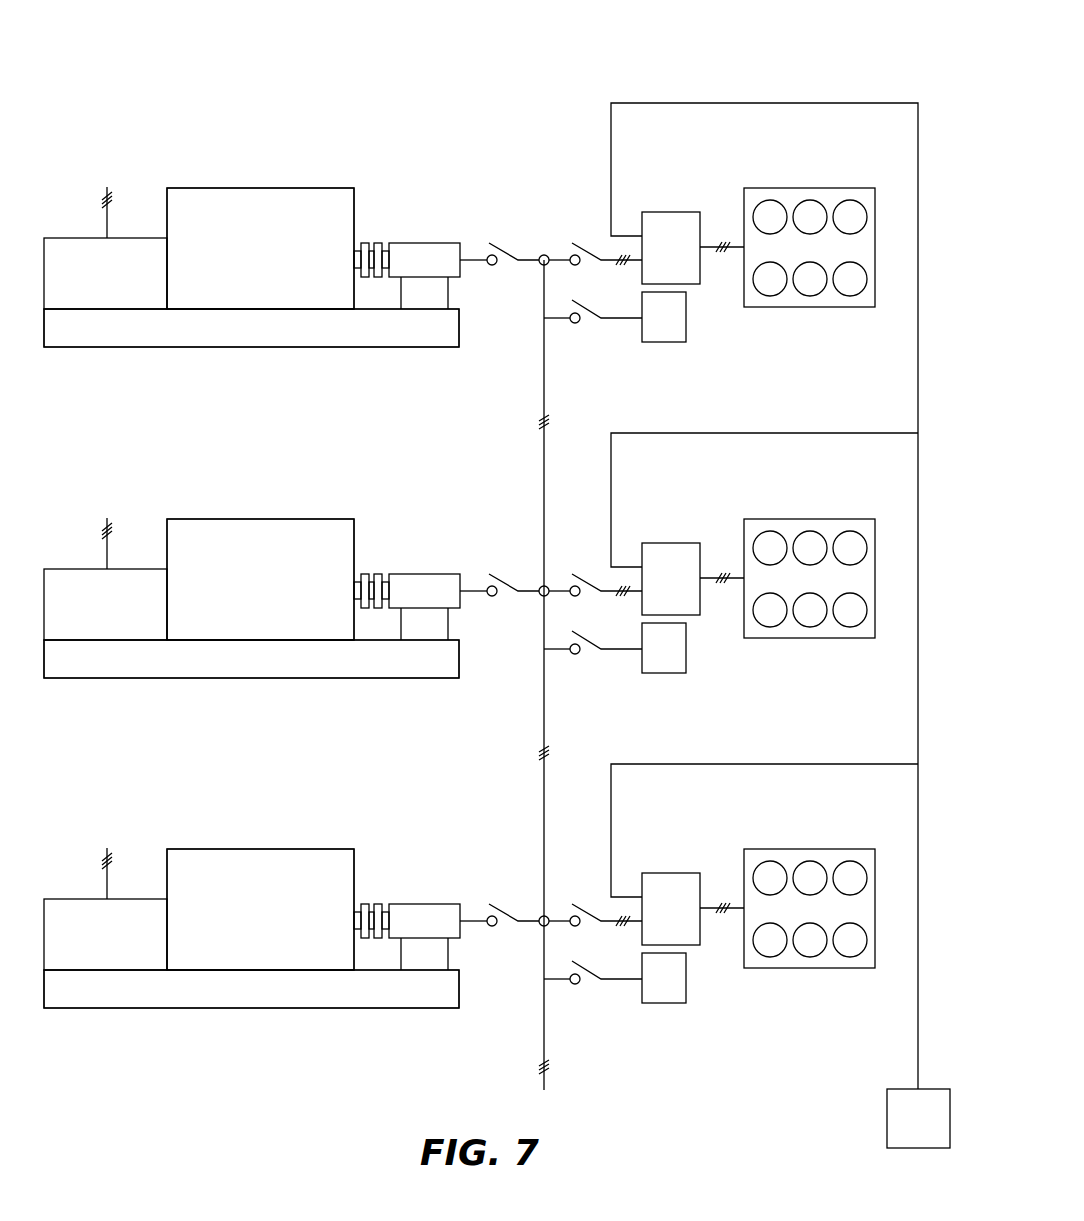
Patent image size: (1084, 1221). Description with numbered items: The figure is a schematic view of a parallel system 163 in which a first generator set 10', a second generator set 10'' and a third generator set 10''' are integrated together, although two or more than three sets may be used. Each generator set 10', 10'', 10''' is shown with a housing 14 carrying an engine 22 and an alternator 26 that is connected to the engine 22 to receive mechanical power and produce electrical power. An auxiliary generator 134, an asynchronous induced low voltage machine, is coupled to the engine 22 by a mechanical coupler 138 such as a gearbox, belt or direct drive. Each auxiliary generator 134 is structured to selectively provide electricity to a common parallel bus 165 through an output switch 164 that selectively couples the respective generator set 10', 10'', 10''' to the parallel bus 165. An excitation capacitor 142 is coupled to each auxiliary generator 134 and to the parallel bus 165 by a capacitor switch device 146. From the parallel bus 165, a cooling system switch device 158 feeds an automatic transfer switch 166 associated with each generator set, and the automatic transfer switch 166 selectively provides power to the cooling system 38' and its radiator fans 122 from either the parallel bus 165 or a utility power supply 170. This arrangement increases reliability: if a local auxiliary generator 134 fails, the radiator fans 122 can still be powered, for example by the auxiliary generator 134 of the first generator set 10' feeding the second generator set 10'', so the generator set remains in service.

The generator set 10' is at (251, 226).
The second generator set 10'' is at (251, 557).
The third generator set 10''' is at (251, 887).
The housing 14 is at (127, 327).
The engine 22 is at (325, 187).
The alternator 26 is at (85, 237).
The cooling system 38' is at (850, 557).
The radiator fans 122 is at (862, 249).
The auxiliary generator 134 is at (422, 262).
The mechanical coupler 138 is at (369, 278).
The excitation capacitor 142 is at (642, 327).
The capacitor switch device 146 is at (590, 318).
The cooling system switch device 158 is at (593, 241).
The parallel system 163 is at (745, 97).
The output switch 164 is at (510, 247).
The parallel bus 165 is at (542, 450).
The automatic transfer switch 166 is at (672, 212).
The utility power supply 170 is at (887, 1108).